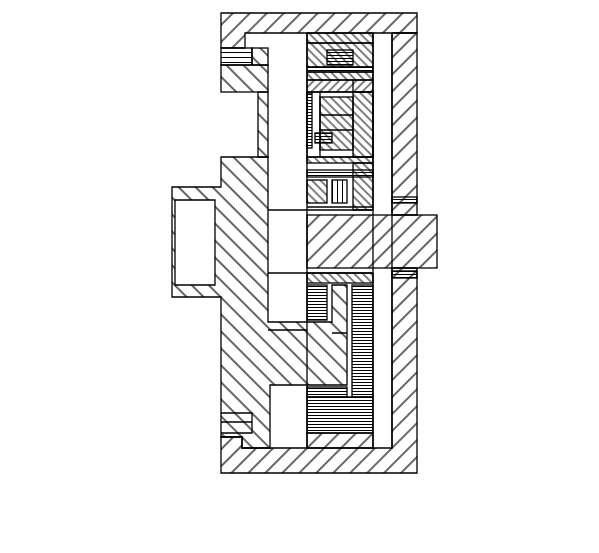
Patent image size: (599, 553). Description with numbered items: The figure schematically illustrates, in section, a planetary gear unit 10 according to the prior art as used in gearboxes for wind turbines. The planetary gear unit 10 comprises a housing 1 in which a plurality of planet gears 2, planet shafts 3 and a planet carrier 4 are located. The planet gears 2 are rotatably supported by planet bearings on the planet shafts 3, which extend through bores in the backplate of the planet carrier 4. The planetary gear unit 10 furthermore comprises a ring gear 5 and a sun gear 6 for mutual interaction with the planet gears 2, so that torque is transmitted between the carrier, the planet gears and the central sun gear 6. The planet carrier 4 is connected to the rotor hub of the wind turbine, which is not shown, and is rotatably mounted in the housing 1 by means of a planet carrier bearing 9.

The housing 1 is at (397, 110).
The planet gears 2 is at (350, 62).
The planet shafts 3 is at (372, 147).
The planet carrier 4 is at (233, 370).
The ring gear 5 is at (388, 33).
The sun gear 6 is at (420, 232).
The planet carrier bearing 9 is at (232, 60).
The planetary gear unit 10 is at (146, 37).